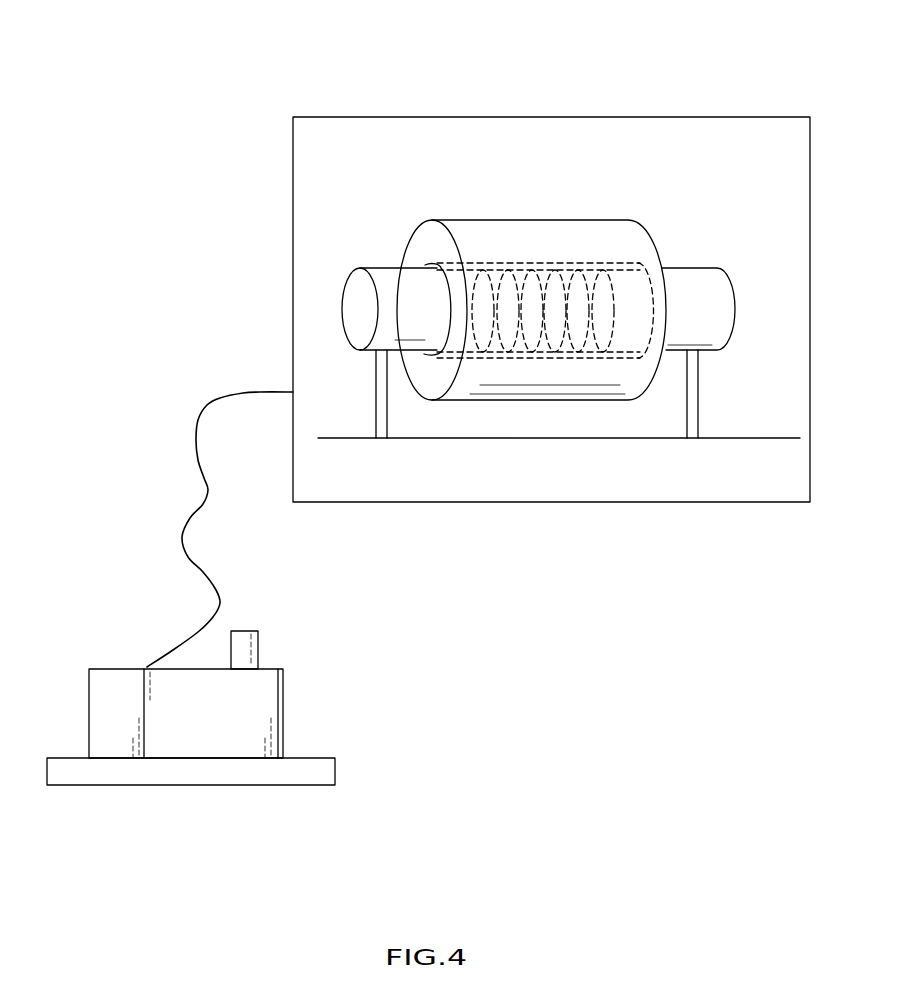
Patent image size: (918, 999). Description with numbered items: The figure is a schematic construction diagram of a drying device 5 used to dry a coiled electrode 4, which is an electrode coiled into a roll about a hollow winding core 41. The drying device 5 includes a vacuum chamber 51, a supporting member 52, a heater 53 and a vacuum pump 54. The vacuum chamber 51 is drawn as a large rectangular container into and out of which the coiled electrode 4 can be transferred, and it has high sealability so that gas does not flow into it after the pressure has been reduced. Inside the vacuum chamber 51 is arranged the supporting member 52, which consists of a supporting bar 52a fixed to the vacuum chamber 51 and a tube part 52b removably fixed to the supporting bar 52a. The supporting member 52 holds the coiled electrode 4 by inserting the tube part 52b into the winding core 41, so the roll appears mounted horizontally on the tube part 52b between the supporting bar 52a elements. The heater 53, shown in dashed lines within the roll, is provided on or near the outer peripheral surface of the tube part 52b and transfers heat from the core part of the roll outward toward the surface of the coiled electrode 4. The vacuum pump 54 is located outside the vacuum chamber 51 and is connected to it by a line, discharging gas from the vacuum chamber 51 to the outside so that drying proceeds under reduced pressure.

The drying device 5 is at (217, 83).
The vacuum chamber 51 is at (430, 117).
The supporting member 52 is at (752, 298).
The supporting bar 52a is at (388, 412).
The tube part 52b is at (692, 268).
The winding core 41 is at (427, 267).
The coiled electrode 4 is at (567, 220).
The heater 53 is at (503, 270).
The vacuum pump 54 is at (284, 687).